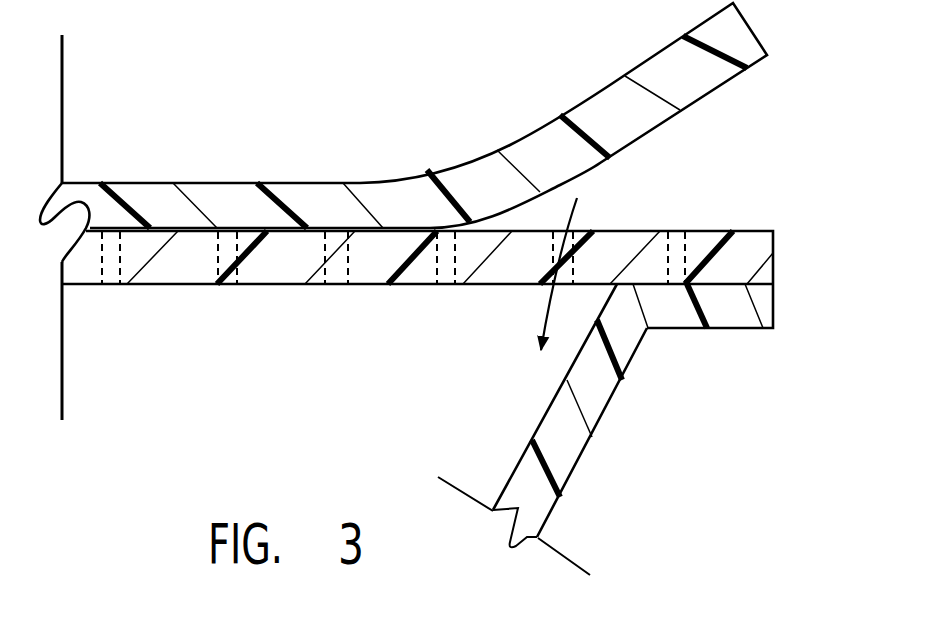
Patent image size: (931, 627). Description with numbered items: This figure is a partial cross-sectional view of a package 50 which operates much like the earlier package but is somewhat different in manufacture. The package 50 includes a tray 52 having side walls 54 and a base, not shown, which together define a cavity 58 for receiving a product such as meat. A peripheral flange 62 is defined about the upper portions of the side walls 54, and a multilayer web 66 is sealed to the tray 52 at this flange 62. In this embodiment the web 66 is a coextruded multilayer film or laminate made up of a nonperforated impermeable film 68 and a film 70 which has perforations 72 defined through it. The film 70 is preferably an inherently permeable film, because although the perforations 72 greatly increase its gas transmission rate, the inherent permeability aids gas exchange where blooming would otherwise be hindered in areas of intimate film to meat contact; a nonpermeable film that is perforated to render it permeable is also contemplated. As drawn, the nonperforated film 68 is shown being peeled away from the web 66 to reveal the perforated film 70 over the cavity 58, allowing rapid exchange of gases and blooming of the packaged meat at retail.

The package 50 is at (403, 131).
The tray 52 is at (582, 429).
The side walls 54 is at (553, 467).
The cavity 58 is at (510, 421).
The peripheral flange 62 is at (718, 315).
The multilayer web 66 is at (275, 168).
The nonperforated impermeable film 68 is at (437, 180).
The film 70 is at (287, 285).
The perforations 72 is at (447, 284).